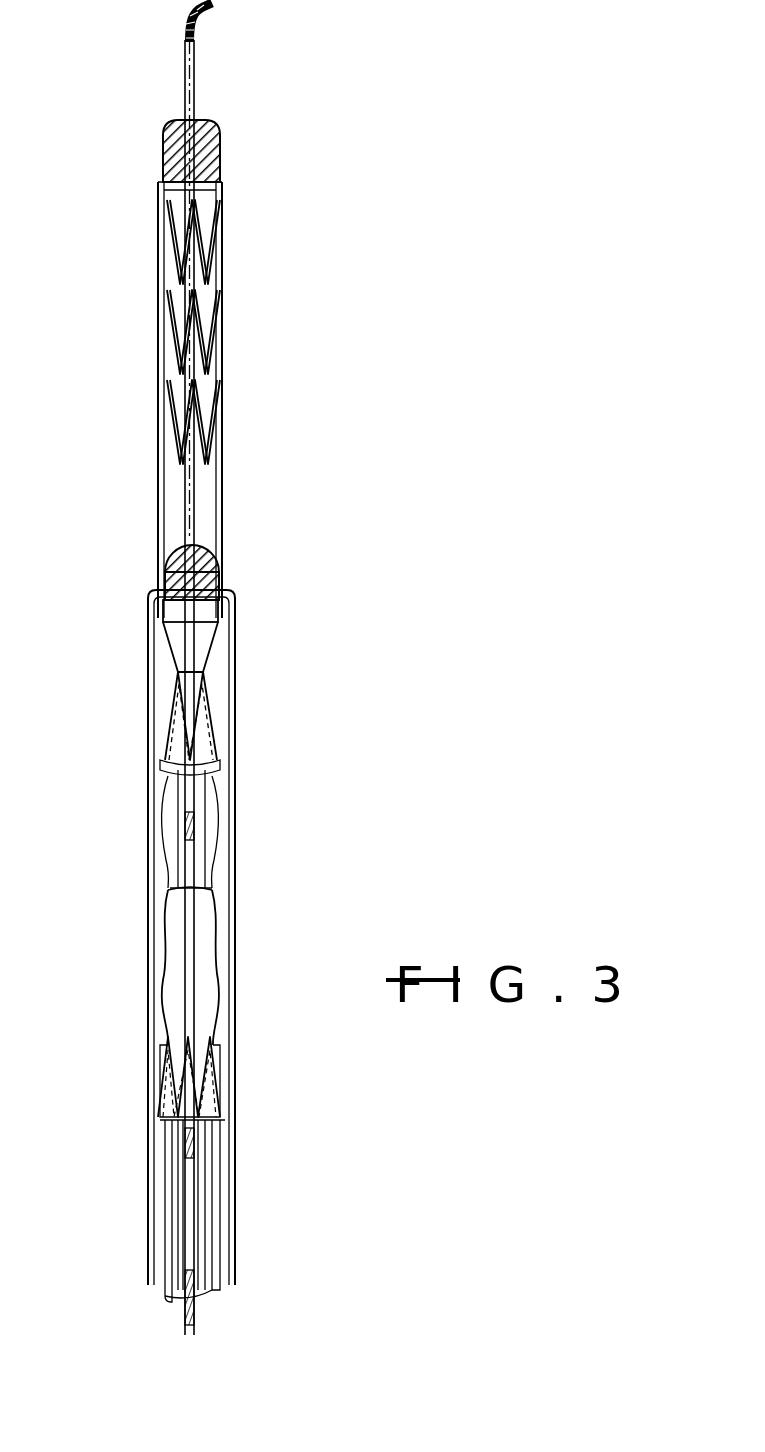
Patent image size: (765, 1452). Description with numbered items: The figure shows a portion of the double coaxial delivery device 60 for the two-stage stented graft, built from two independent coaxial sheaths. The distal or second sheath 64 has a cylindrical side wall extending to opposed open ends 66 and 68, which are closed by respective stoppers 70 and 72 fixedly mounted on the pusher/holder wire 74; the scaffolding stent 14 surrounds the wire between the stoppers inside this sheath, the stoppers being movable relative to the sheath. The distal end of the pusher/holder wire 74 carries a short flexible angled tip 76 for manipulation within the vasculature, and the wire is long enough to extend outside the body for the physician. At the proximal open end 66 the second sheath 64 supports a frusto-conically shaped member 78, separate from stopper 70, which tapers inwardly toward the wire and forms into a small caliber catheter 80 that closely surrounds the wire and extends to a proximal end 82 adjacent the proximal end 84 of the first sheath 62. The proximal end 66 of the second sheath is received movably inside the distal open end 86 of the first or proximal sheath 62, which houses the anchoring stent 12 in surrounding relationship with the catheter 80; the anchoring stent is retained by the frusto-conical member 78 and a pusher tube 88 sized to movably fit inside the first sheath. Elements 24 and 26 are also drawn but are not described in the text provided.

The anchoring stent 12 is at (188, 812).
The scaffolding stent 14 is at (223, 372).
The second stent 24 is at (205, 690).
The balloon 26 is at (232, 1012).
The double coaxial device 60 is at (384, 300).
The first sheath 62 is at (236, 908).
The second sheath 64 is at (223, 503).
The proximal open end 66 is at (208, 553).
The open end 68 is at (210, 192).
The stopper 70 is at (220, 577).
The stopper 72 is at (222, 142).
The pusher/holder wire 74 is at (196, 98).
The flexible angled tip 76 is at (206, 22).
The frusto-conically shaped member 78 is at (205, 648).
The catheter 80 is at (205, 833).
The proximal end 82 is at (206, 1218).
The proximal end 84 is at (236, 782).
The distal open end 86 is at (147, 640).
The pusher tube 88 is at (212, 1142).